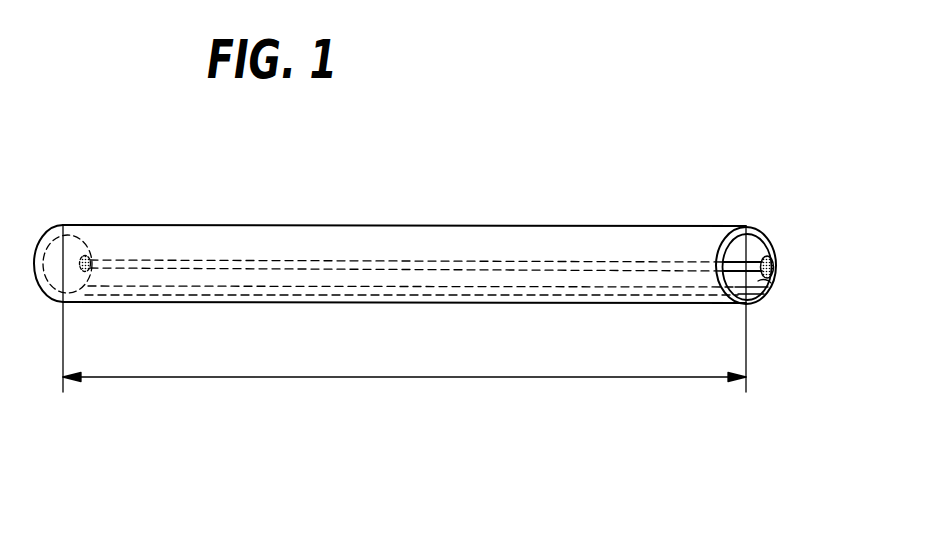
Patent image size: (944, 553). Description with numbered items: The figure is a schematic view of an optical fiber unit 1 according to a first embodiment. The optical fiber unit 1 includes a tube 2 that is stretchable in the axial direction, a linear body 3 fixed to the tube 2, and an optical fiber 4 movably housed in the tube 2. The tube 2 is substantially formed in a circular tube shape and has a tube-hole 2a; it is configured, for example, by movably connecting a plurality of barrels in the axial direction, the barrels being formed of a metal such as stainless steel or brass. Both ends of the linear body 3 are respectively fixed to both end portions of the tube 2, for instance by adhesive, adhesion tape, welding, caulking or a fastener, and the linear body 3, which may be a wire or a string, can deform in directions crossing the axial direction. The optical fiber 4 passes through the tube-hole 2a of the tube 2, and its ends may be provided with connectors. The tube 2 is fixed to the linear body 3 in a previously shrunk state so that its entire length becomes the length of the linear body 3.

The optical fiber unit 1 is at (696, 143).
The tube 2 is at (557, 237).
The tube-hole 2a is at (729, 246).
The linear body 3 is at (768, 257).
The optical fiber 4 is at (769, 283).